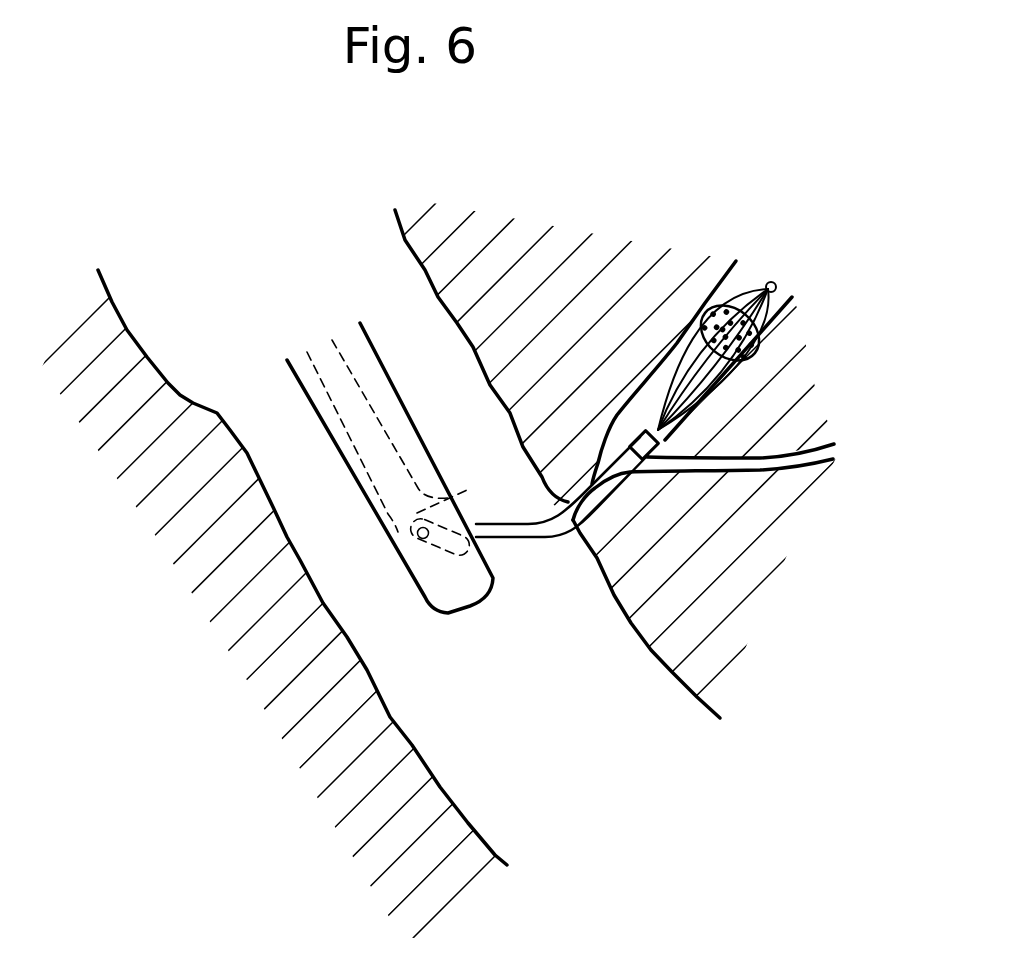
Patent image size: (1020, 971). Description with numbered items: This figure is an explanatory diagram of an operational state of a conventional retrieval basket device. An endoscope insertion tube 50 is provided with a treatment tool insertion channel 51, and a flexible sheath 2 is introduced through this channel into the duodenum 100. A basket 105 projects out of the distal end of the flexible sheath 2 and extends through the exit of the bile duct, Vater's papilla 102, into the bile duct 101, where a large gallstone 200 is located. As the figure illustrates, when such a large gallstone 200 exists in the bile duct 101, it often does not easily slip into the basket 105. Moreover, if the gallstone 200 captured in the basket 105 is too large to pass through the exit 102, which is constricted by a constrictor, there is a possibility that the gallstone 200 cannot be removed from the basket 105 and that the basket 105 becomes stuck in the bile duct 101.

The flexible sheath 2 is at (523, 538).
The insertion tube 50 is at (477, 608).
The treatment tool insertion channel 51 is at (346, 429).
The duodenum 100 is at (297, 562).
The bile duct 101 is at (706, 293).
The exit (Vater's papilla) of the bile duct 102 is at (581, 497).
The basket 105 is at (679, 342).
The gallstone 200 is at (756, 341).